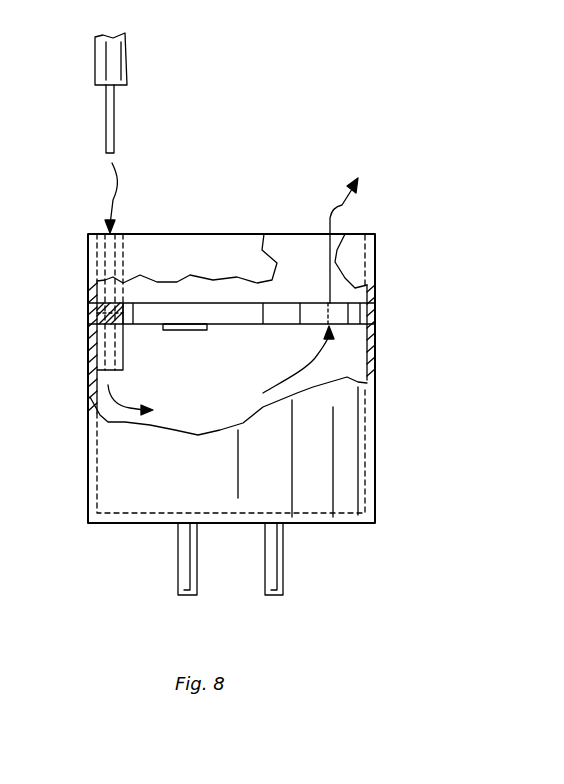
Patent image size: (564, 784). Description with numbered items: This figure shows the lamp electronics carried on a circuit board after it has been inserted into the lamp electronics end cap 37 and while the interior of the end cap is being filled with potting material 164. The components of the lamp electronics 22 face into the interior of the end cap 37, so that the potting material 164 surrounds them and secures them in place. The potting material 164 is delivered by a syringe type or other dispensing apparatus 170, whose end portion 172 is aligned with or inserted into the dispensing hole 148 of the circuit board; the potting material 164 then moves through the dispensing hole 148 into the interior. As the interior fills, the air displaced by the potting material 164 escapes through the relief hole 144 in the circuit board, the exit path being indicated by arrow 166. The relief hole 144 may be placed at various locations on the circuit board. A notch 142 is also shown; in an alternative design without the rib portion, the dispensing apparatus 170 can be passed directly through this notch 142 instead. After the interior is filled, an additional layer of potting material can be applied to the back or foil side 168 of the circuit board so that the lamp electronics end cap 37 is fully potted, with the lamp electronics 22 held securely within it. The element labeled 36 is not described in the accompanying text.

The dispensing apparatus 170 is at (128, 57).
The end portion 172 is at (114, 125).
The potting material 164 is at (108, 181).
The dispensing hole 148 is at (108, 254).
The relief hole 144 is at (330, 318).
The arrow 166 is at (340, 205).
The notch 142 is at (88, 320).
The foil side 168 is at (193, 330).
The lamp electronics 22 is at (143, 326).
The chamber 36 is at (87, 427).
The lamp electronics end cap 37 is at (343, 470).